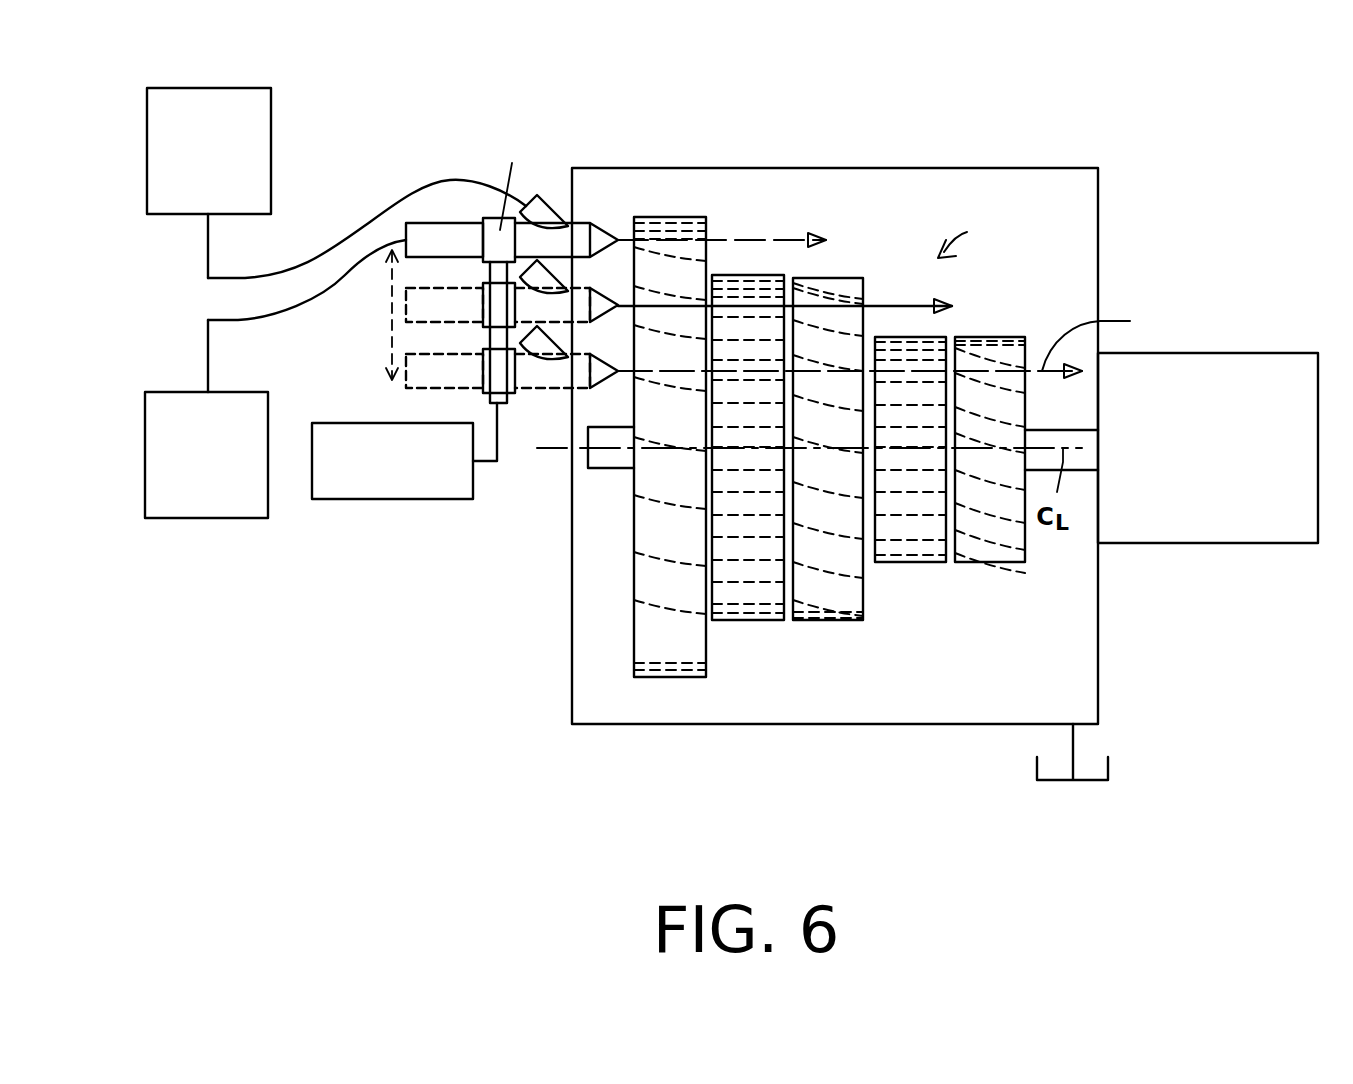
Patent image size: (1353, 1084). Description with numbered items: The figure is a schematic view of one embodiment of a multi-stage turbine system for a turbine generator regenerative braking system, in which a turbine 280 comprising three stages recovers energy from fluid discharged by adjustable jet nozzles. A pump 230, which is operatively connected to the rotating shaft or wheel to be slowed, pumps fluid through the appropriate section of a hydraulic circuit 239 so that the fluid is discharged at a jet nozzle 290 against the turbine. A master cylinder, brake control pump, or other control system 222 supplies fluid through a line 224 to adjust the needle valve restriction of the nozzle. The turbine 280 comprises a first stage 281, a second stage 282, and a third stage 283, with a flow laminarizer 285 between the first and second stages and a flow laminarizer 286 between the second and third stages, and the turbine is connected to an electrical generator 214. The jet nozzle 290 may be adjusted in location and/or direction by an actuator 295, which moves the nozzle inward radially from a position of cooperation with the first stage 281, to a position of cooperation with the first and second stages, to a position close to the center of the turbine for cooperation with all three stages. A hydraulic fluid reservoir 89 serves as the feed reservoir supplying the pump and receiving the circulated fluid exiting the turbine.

The pump 230 is at (209, 183).
The control system 222 is at (206, 419).
The hydraulic circuit 239 is at (343, 236).
The line 224 is at (283, 303).
The actuator 295 is at (404, 451).
The jet nozzle 290 is at (583, 232).
The turbine 280 is at (835, 446).
The first stage 281 is at (667, 677).
The flow laminarizer 285 is at (753, 275).
The second stage 282 is at (827, 620).
The flow laminarizer 286 is at (912, 337).
The third stage 283 is at (986, 562).
The electrical generator 214 is at (1192, 495).
The hydraulic fluid reservoir 89 is at (1110, 771).